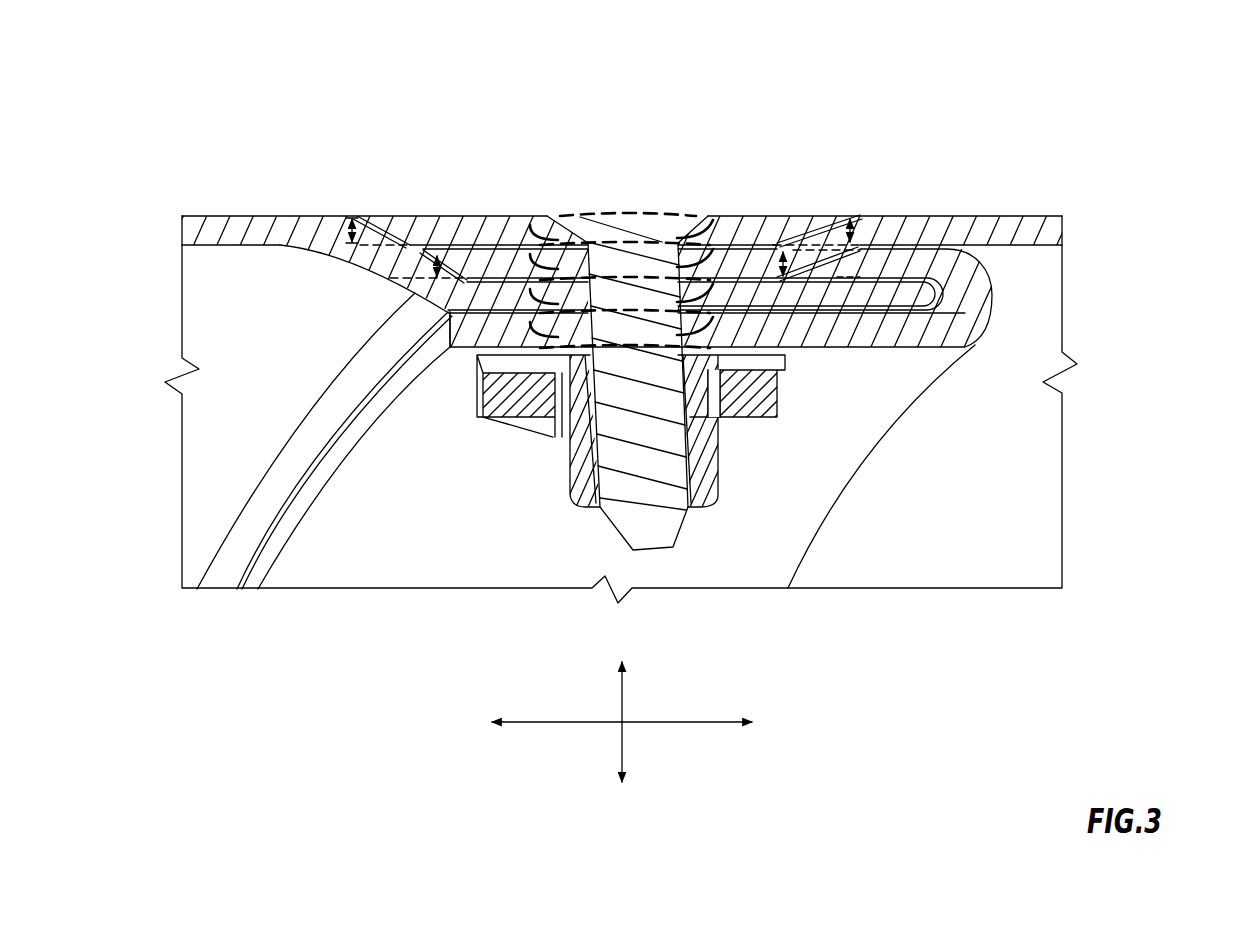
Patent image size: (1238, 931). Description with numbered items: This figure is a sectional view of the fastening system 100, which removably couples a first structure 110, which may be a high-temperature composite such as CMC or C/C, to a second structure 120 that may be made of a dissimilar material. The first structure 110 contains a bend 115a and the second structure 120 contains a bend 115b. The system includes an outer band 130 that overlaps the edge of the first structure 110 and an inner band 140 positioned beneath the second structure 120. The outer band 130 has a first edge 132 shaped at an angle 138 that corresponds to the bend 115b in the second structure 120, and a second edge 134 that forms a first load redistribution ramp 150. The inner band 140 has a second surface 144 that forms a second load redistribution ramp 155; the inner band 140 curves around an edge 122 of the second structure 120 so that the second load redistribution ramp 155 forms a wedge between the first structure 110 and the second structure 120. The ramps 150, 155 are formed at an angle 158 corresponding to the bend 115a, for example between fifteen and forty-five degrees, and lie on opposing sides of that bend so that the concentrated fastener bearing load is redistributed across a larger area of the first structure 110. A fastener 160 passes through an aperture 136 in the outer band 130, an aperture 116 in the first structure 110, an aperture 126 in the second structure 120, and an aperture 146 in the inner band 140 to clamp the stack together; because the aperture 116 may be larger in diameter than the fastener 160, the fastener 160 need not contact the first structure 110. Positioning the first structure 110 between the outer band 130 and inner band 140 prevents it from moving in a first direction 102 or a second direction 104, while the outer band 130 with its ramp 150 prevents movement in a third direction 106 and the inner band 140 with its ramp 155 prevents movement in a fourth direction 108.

The fastening system 100 is at (250, 66).
The first direction 102 is at (623, 675).
The second direction 104 is at (623, 764).
The third direction 106 is at (529, 724).
The fourth direction 108 is at (714, 724).
The first structure 110 is at (1035, 537).
The bend 115a is at (851, 220).
The bend 115b is at (386, 247).
The aperture 116 is at (553, 247).
The second structure 120 is at (222, 462).
The edge 122 is at (890, 300).
The aperture 126 is at (570, 285).
The outer band 130 is at (723, 212).
The first edge 132 is at (414, 226).
The second edge 134 is at (767, 212).
The aperture 136 is at (452, 349).
The angle 138 is at (366, 226).
The inner band 140 is at (320, 574).
The second surface 144 is at (964, 270).
The aperture 146 is at (553, 368).
The first load redistribution ramp 150 is at (806, 214).
The second load redistribution ramp 155 is at (837, 277).
The angle 158 is at (868, 233).
The fastener 160 is at (612, 212).